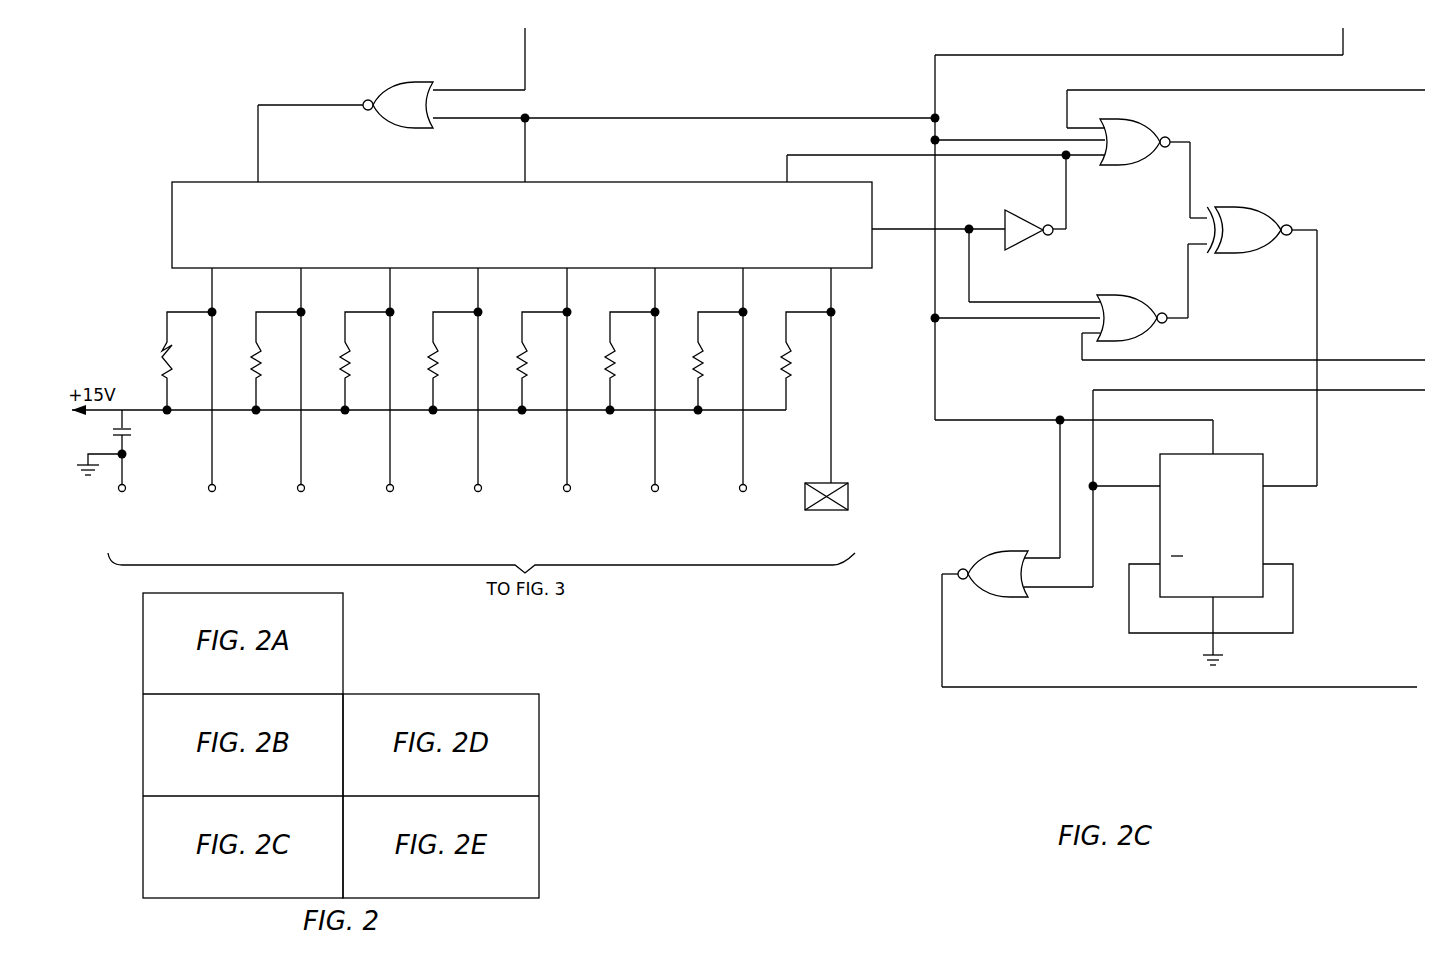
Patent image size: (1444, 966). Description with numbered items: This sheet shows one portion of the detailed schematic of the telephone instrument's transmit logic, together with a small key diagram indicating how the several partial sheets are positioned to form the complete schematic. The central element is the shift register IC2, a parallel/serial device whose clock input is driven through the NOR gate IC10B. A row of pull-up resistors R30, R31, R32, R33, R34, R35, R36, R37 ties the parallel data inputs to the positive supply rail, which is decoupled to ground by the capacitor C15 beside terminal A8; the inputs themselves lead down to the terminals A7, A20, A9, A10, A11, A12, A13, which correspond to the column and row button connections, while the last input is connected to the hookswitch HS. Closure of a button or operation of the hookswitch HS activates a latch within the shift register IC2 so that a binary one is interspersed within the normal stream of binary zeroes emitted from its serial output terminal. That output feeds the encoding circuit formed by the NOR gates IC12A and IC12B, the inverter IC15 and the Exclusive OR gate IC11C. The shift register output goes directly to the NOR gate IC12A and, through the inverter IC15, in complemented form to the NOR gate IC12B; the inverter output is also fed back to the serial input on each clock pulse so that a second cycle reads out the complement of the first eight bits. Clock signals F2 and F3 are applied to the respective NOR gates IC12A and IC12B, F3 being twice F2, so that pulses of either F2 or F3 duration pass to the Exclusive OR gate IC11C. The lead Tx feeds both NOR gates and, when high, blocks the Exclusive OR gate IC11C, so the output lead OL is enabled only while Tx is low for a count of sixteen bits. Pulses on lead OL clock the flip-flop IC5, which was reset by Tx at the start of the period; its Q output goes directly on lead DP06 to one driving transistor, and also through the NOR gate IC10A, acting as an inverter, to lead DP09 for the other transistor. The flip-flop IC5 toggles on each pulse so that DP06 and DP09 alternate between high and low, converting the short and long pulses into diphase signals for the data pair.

The NOR gate IC10B is at (596, 132).
The shift register IC2 is at (522, 225).
The transmit lead Tx is at (935, 74).
The clock signal F3 is at (1386, 91).
The NOR gate IC12B is at (1153, 168).
The inverter IC15 is at (1028, 246).
The Exclusive OR gate IC11C is at (1262, 346).
The NOR gate IC12A is at (1144, 302).
The clock signal F2 is at (1364, 361).
The output lead OL is at (1317, 338).
The output lead DP06 is at (1406, 392).
The flip-flop IC5 is at (1203, 542).
The NOR gate IC10A is at (1017, 553).
The output lead DP09 is at (1290, 690).
The capacitor C15 is at (123, 447).
The terminal A8 (ground) A8 is at (120, 501).
The resistor R30 is at (187, 363).
The resistor R31 is at (276, 363).
The resistor R32 is at (365, 363).
The resistor R33 is at (453, 363).
The resistor R34 is at (542, 363).
The resistor R35 is at (630, 363).
The resistor R36 is at (718, 363).
The resistor R37 is at (806, 361).
The terminal A7 column 1 A7 is at (212, 402).
The terminal A20 column 2 A20 is at (301, 402).
The terminal A9 row 1 A9 is at (390, 412).
The terminal A10 row 2 A10 is at (478, 412).
The terminal A11 row 3 A11 is at (567, 412).
The terminal A12 row 4 A12 is at (655, 412).
The terminal A13 row 5 A13 is at (743, 412).
The hookswitch HS is at (841, 389).